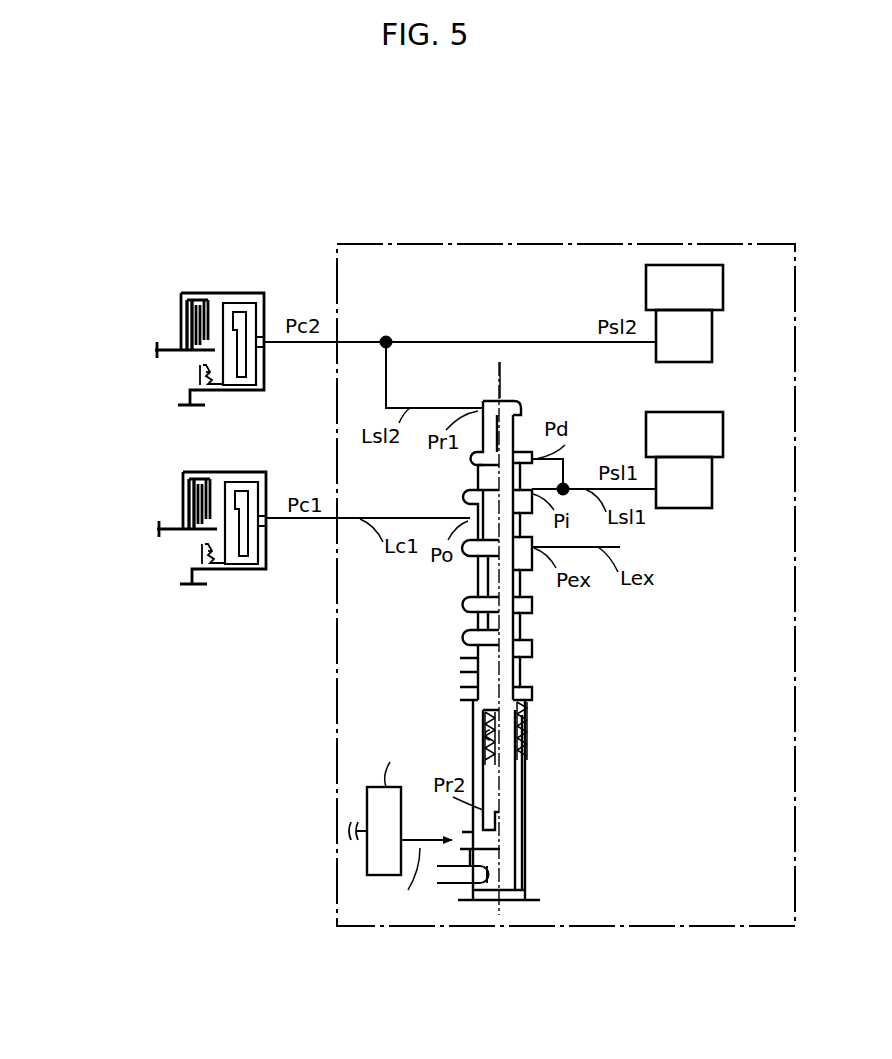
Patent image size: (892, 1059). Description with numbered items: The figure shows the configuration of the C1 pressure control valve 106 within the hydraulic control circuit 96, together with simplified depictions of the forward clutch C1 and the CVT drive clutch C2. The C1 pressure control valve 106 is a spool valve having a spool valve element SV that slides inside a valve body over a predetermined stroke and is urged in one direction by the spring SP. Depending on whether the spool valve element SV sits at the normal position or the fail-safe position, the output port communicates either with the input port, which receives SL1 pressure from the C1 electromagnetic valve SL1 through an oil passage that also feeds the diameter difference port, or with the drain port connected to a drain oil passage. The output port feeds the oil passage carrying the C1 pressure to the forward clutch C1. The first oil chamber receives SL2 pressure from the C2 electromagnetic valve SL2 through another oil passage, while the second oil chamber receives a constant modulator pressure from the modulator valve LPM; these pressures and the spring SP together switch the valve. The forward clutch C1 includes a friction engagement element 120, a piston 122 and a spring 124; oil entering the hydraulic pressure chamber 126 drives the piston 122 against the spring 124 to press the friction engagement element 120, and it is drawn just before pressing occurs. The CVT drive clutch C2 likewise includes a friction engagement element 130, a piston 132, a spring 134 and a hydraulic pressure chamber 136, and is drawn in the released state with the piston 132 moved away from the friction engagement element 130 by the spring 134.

The hydraulic control circuit 96 is at (598, 243).
The C1 pressure control valve 106 is at (495, 328).
The friction engagement element 120 is at (178, 504).
The piston 122 is at (244, 505).
The spring 124 is at (218, 558).
The hydraulic pressure chamber 126 is at (256, 545).
The friction engagement element 130 is at (176, 318).
The piston 132 is at (242, 328).
The spring 134 is at (218, 378).
The hydraulic pressure chamber 136 is at (254, 367).
The forward clutch C1 is at (93, 534).
The CVT drive clutch C2 is at (93, 342).
The C1 electromagnetic valve SL1 is at (684, 460).
The C2 electromagnetic valve SL2 is at (684, 313).
The spool valve element SV is at (476, 648).
The spring SP is at (527, 758).
The modulator valve LPM is at (401, 828).